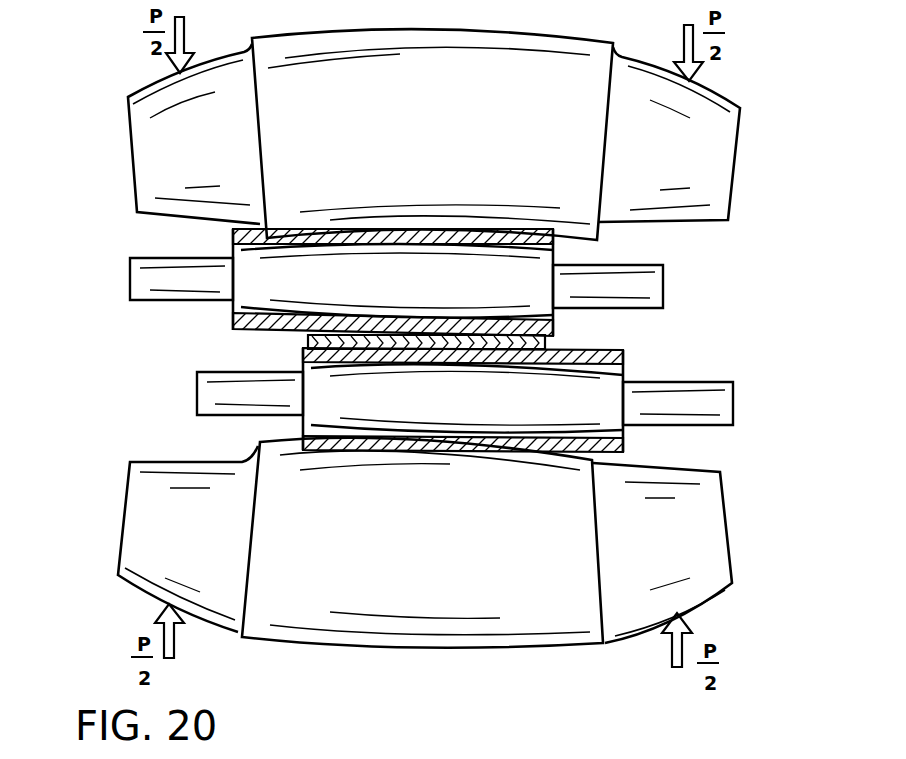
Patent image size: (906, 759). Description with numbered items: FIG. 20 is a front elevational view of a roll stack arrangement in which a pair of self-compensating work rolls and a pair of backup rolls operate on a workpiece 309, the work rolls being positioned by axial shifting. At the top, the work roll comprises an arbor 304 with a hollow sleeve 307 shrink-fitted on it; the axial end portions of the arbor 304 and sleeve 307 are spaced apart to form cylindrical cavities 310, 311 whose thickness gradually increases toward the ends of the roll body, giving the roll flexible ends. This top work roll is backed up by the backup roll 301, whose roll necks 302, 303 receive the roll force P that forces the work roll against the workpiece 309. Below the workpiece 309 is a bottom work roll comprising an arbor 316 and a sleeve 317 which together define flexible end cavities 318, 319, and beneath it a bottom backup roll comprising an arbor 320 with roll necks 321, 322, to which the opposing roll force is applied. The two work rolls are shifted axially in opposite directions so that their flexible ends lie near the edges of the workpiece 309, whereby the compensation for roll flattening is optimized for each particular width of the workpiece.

The backup roll 301 is at (455, 63).
The upper left die side segment 302 is at (148, 108).
The roll neck 303 is at (715, 120).
The arbor 304 is at (335, 258).
The hollow sleeve 307 is at (236, 231).
The workpiece 309 is at (545, 344).
The cylindrical cavity 310 is at (233, 251).
The cylindrical cavity 311 is at (555, 252).
The arbor 316 is at (432, 422).
The sleeve 317 is at (530, 448).
The flexible end cavity 318 is at (303, 365).
The flexible end cavity 319 is at (625, 372).
The arbor 320 is at (453, 637).
The roll neck 321 is at (187, 480).
The roll neck 322 is at (705, 583).